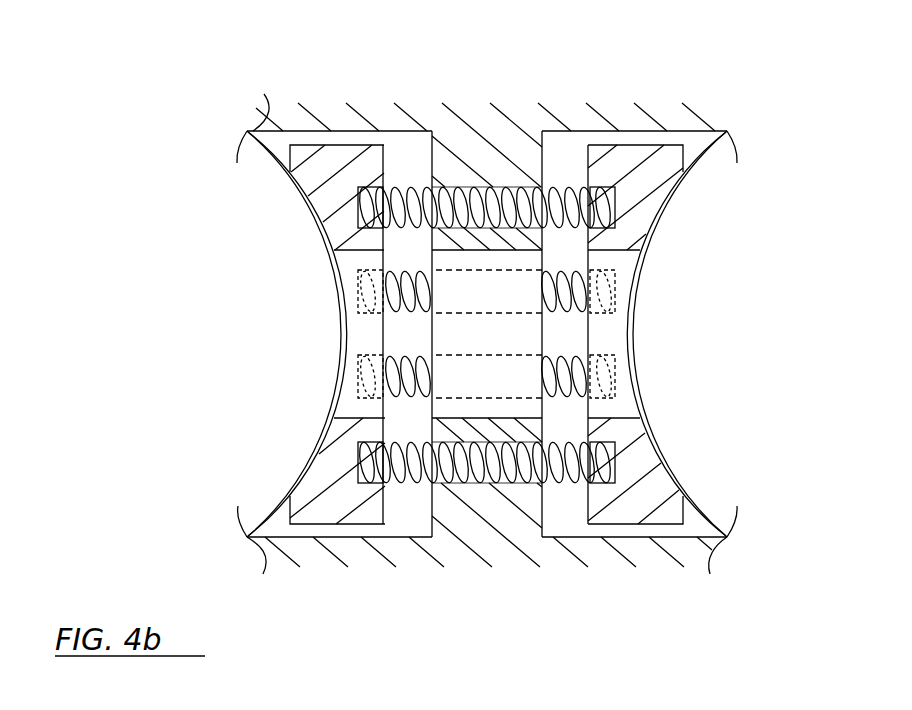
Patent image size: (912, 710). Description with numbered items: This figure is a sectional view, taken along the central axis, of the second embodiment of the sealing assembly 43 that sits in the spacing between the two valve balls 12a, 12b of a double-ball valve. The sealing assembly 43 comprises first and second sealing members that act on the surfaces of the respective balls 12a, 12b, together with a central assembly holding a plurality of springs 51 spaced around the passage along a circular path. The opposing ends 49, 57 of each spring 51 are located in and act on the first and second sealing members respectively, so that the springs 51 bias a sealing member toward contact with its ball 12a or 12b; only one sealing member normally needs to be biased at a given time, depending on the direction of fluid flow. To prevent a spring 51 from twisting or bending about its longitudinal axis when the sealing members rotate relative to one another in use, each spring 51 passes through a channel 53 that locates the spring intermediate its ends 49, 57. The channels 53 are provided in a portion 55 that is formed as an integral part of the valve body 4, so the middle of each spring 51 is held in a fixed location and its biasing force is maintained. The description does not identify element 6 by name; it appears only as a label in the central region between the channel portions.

The valve body 4 is at (482, 170).
The gap 6 is at (479, 347).
The ball 12a is at (244, 346).
The ball 12b is at (762, 335).
The sealing assembly 43 is at (512, 137).
The spring end 49 is at (367, 182).
The spring 51 is at (562, 185).
The channel 53 is at (452, 185).
The portion 55 is at (478, 142).
The spring end 57 is at (617, 183).